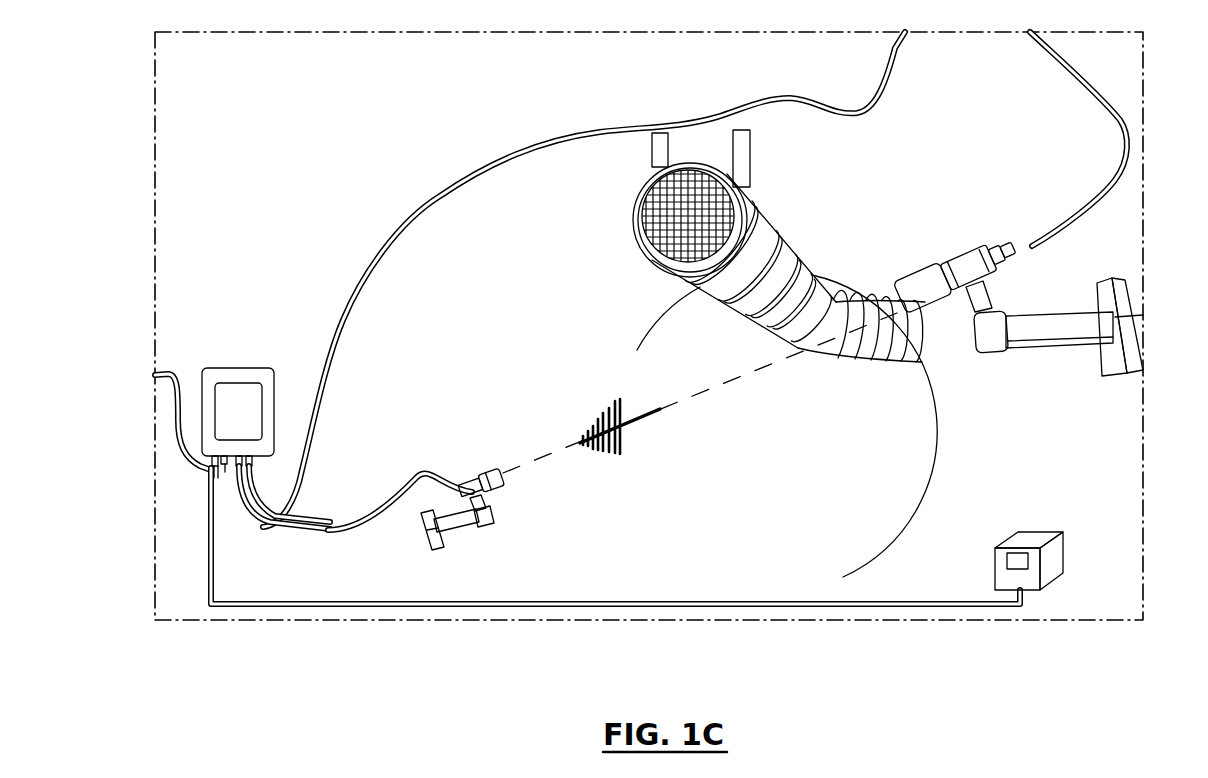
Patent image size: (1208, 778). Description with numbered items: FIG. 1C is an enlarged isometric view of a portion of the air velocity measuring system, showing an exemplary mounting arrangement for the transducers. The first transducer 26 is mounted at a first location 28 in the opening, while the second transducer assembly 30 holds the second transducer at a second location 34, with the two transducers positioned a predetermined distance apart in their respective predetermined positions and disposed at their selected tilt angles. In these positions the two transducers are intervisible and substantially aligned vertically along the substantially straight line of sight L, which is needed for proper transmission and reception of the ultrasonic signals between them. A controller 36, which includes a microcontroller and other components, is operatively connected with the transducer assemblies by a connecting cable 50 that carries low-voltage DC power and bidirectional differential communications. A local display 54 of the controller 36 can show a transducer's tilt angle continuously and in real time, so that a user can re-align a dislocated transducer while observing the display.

The first transducer 26 is at (955, 276).
The first location 28 is at (1105, 255).
The second transducer assembly 30 is at (488, 537).
The second location 34 is at (458, 548).
The controller 36 is at (243, 370).
The connecting cable 50 is at (313, 537).
The local display 54 is at (1008, 558).
The line of sight L is at (735, 378).